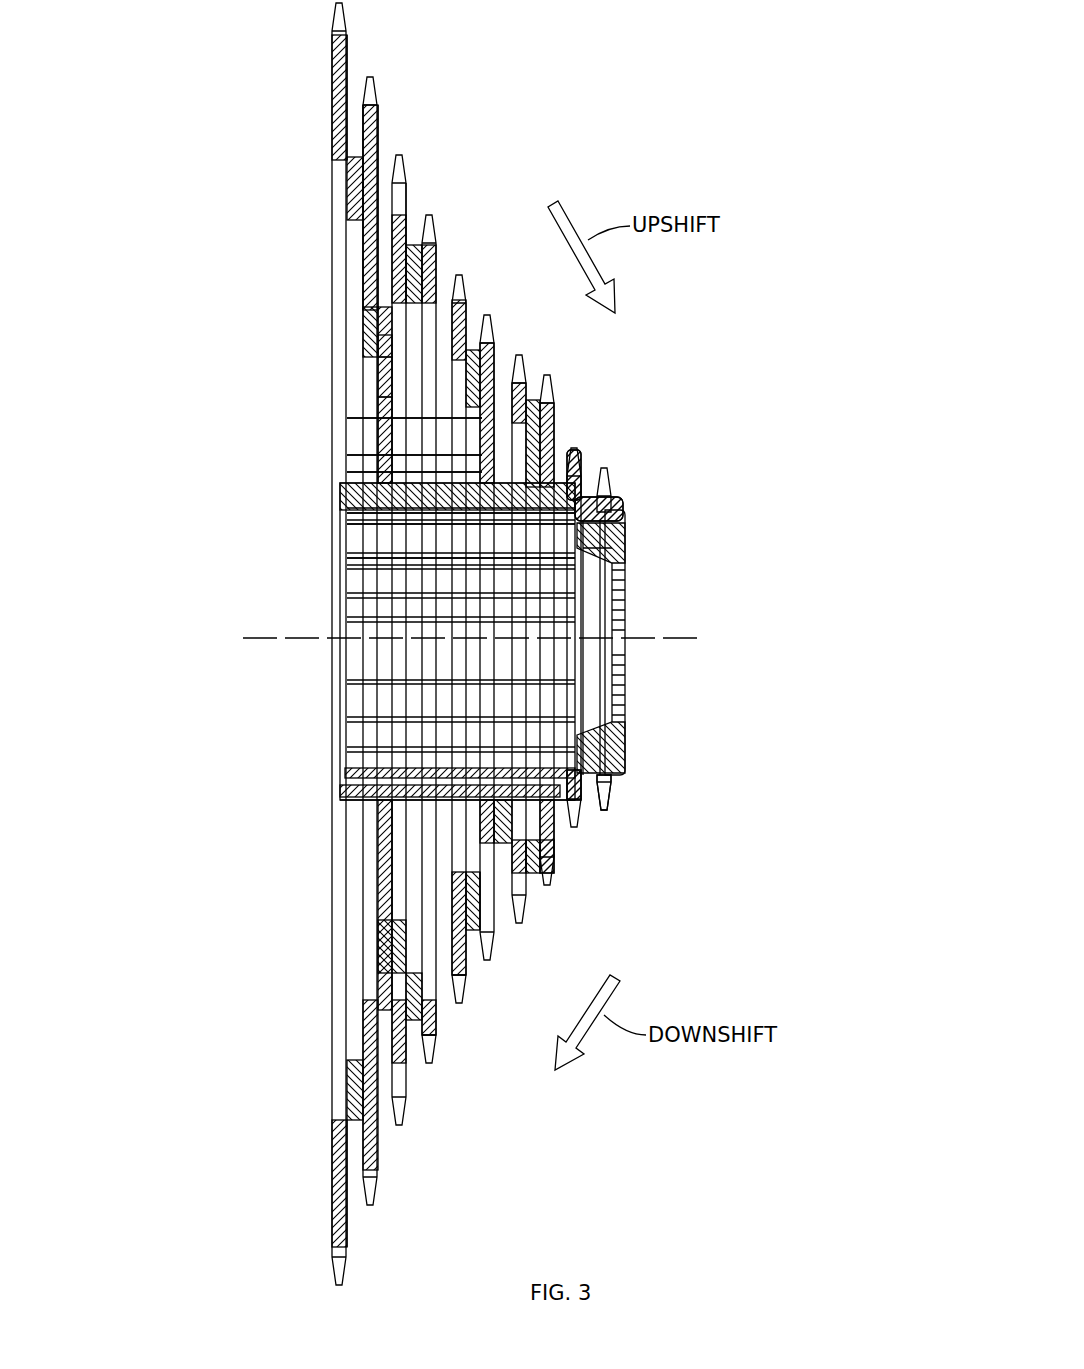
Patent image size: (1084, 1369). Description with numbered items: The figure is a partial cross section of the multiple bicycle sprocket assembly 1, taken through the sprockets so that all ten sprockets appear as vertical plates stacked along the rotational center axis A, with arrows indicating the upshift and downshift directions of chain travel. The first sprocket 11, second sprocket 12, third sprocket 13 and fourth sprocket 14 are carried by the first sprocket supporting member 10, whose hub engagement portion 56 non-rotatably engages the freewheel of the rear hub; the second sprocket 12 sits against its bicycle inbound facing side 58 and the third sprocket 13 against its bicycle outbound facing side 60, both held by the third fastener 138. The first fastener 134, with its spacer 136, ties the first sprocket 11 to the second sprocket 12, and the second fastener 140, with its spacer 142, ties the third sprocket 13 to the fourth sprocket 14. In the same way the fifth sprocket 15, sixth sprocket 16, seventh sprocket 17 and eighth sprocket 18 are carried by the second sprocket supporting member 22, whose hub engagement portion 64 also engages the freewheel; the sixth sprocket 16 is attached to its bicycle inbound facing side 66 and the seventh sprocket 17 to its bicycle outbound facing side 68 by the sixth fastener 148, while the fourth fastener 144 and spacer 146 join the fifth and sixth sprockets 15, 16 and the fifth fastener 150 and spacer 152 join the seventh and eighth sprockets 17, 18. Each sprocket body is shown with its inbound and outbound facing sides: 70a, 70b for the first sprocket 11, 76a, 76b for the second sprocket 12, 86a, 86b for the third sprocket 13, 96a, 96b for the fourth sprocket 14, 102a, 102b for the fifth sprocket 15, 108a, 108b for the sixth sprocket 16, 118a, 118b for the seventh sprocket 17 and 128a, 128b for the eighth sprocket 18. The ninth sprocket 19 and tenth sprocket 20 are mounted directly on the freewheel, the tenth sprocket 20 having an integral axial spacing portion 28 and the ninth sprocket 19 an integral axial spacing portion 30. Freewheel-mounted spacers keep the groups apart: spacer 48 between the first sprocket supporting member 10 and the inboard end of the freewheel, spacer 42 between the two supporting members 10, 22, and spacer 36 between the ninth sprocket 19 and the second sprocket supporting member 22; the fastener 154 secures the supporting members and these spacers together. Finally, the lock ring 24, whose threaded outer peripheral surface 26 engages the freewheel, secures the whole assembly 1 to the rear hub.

The multiple bicycle sprocket assembly 1 is at (672, 366).
The rotational center axis A is at (672, 640).
The first sprocket supporting member 10 is at (375, 441).
The first sprocket 11 is at (328, 60).
The second sprocket 12 is at (381, 113).
The third sprocket 13 is at (409, 175).
The fourth sprocket 14 is at (439, 226).
The fifth sprocket 15 is at (469, 279).
The sixth sprocket 16 is at (497, 316).
The seventh sprocket 17 is at (529, 367).
The eighth sprocket 18 is at (557, 390).
The ninth sprocket 19 is at (586, 452).
The tenth sprocket 20 is at (615, 480).
The second sprocket supporting member 22 is at (470, 472).
The lock ring 24 is at (628, 538).
The outer peripheral surface 26 is at (614, 785).
The axial spacing portion 28 is at (590, 500).
The axial spacing portion 30 is at (575, 815).
The spacer 36 is at (583, 560).
The spacer 42 is at (410, 806).
The spacer 48 is at (351, 516).
The hub engagement portion 56 is at (380, 775).
The bicycle inbound facing side 58 is at (378, 406).
The bicycle outbound facing side 60 is at (392, 397).
The hub engagement portion 64 is at (530, 515).
The bicycle inbound facing side 66 is at (482, 500).
The bicycle outbound facing side 68 is at (583, 447).
The bicycle inbound facing side 70a is at (347, 110).
The bicycle outbound facing side 70b is at (347, 52).
The bicycle inbound facing side 76a is at (363, 138).
The bicycle outbound facing side 76b is at (378, 142).
The bicycle inbound facing side 86a is at (378, 248).
The bicycle outbound facing side 86b is at (407, 232).
The bicycle inbound facing side 96a is at (378, 318).
The bicycle outbound facing side 96b is at (436, 300).
The bicycle inbound facing side 102a is at (392, 372).
The bicycle outbound facing side 102b is at (455, 975).
The bicycle inbound facing side 108a is at (450, 418).
The bicycle outbound facing side 108b is at (498, 905).
The bicycle inbound facing side 118a is at (505, 405).
The bicycle outbound facing side 118b is at (535, 892).
The bicycle inbound facing side 128a is at (450, 455).
The bicycle outbound facing side 128b is at (556, 878).
The first fastener 134 is at (342, 1085).
The spacer 136 is at (347, 1122).
The third fastener 138 is at (378, 930).
The second fastener 140 is at (405, 985).
The spacer 142 is at (420, 1032).
The fourth fastener 144 is at (450, 865).
The spacer 146 is at (470, 930).
The sixth fastener 148 is at (545, 730).
The fifth fastener 150 is at (560, 822).
The spacer 152 is at (553, 893).
The fastener 154 is at (338, 793).